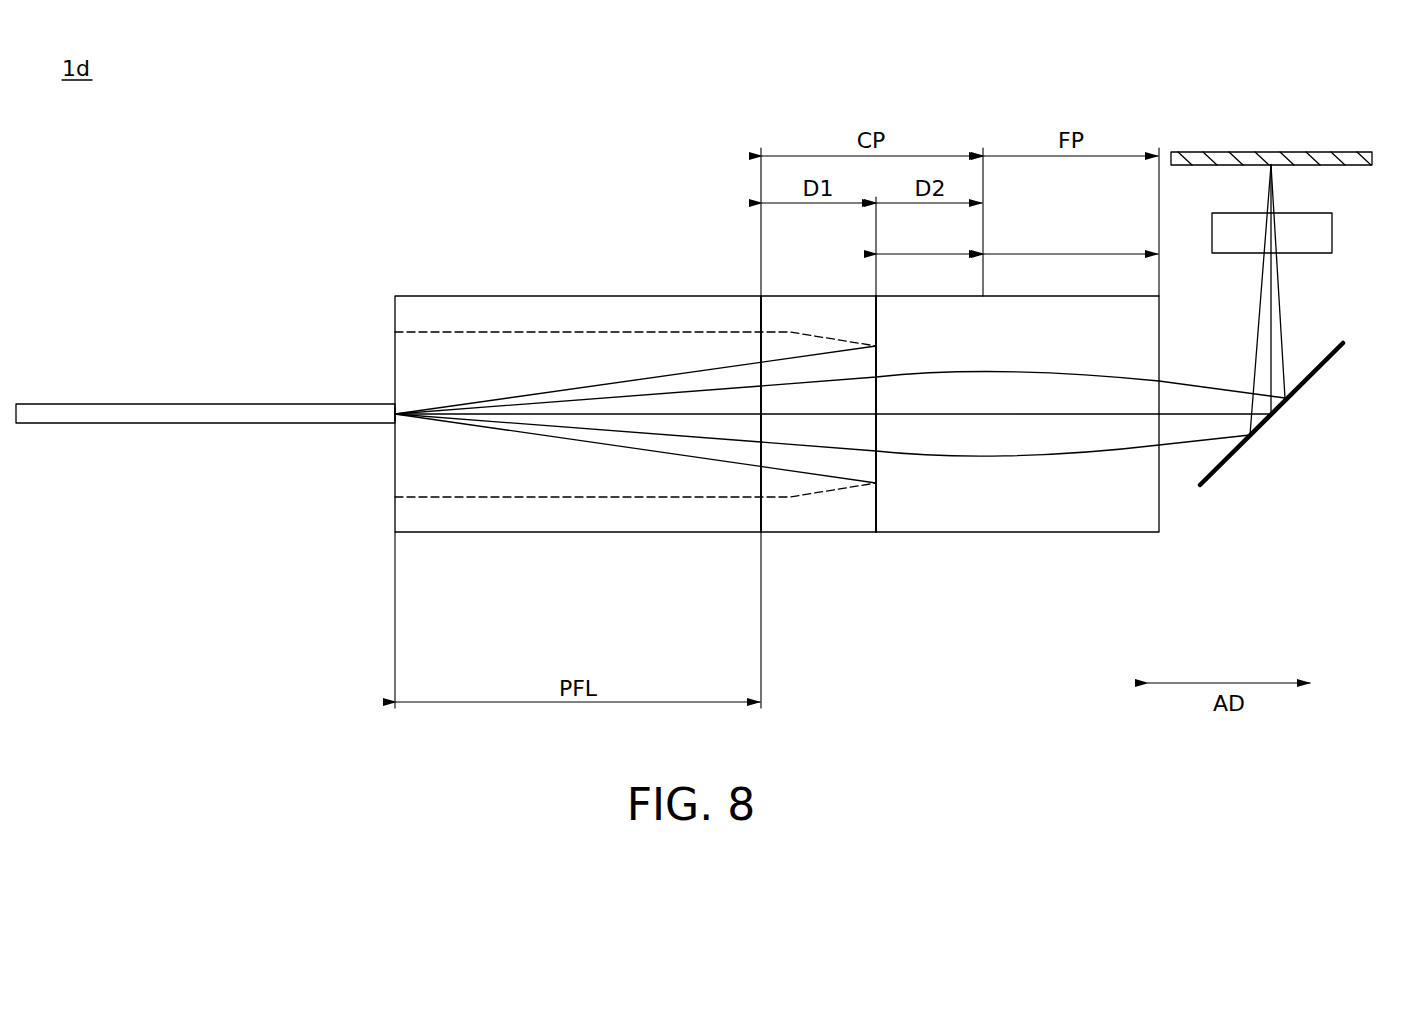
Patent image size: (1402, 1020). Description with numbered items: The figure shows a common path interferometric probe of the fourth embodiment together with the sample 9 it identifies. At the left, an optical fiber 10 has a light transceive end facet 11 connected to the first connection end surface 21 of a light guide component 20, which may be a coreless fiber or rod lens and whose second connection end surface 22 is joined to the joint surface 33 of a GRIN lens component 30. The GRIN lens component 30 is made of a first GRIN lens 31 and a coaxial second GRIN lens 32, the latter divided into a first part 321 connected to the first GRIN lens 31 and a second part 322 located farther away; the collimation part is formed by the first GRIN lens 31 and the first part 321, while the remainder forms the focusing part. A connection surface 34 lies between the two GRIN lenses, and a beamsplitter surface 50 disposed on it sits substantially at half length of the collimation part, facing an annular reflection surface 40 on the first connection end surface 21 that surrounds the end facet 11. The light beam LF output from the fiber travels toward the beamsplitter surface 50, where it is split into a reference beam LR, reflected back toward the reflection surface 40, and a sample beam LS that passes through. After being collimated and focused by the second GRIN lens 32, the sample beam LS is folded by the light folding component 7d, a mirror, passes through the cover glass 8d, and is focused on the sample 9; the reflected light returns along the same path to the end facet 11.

The optical fiber 10 is at (205, 403).
The light transceive end facet 11 is at (397, 413).
The light guide component 20 is at (578, 537).
The first connection end surface 21 is at (394, 483).
The second connection end surface 22 is at (761, 511).
The GRIN lens component 30 is at (960, 497).
The first GRIN lens 31 is at (808, 533).
The second GRIN lens 32 is at (1017, 476).
The joint surface 33 is at (760, 522).
The connection surface 34 is at (876, 514).
The reflection surface 40 is at (395, 332).
The beamsplitter surface 50 is at (876, 533).
The first part 321 is at (930, 253).
The second part 322 is at (1072, 253).
The sample 9 is at (1325, 152).
The cover glass 8d is at (1332, 233).
The light folding component 7d is at (1313, 373).
The reference beam LR is at (578, 332).
The light beam LF is at (663, 373).
The sample beam LS is at (1225, 390).